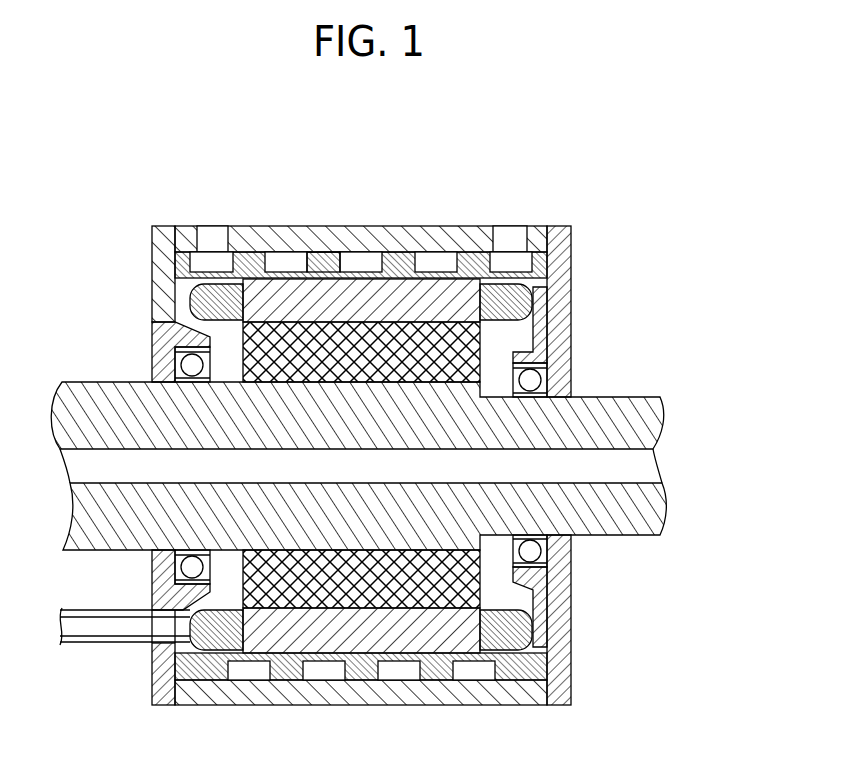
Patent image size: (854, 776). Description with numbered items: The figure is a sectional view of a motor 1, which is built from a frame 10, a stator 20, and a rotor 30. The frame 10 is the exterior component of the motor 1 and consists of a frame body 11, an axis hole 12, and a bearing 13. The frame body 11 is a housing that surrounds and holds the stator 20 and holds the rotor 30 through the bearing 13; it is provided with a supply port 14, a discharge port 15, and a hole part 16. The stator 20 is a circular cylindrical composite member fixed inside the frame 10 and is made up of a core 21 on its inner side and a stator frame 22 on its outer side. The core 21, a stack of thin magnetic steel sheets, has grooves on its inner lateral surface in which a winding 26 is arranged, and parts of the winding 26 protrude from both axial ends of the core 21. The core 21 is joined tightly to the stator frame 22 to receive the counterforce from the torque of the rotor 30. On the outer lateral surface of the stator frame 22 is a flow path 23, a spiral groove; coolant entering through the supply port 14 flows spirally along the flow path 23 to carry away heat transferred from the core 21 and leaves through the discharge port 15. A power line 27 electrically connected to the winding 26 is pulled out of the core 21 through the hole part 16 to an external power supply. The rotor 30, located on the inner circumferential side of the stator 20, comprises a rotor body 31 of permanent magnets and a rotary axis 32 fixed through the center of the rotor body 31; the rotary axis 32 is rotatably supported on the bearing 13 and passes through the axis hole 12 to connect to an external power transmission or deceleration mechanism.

The motor 1 is at (371, 398).
The frame 10 is at (374, 438).
The frame body 11 is at (538, 226).
The axis hole 12 is at (145, 371).
The bearing 13 is at (172, 341).
The supply port 14 is at (508, 224).
The discharge port 15 is at (223, 223).
The hole part 16 is at (142, 607).
The stator 20 is at (209, 256).
The core 21 is at (424, 290).
The stator frame 22 is at (328, 262).
The flow path 23 is at (284, 258).
The winding 26 is at (510, 297).
The power line 27 is at (96, 648).
The rotor 30 is at (495, 354).
The rotor body 31 is at (486, 598).
The rotary axis 32 is at (637, 398).